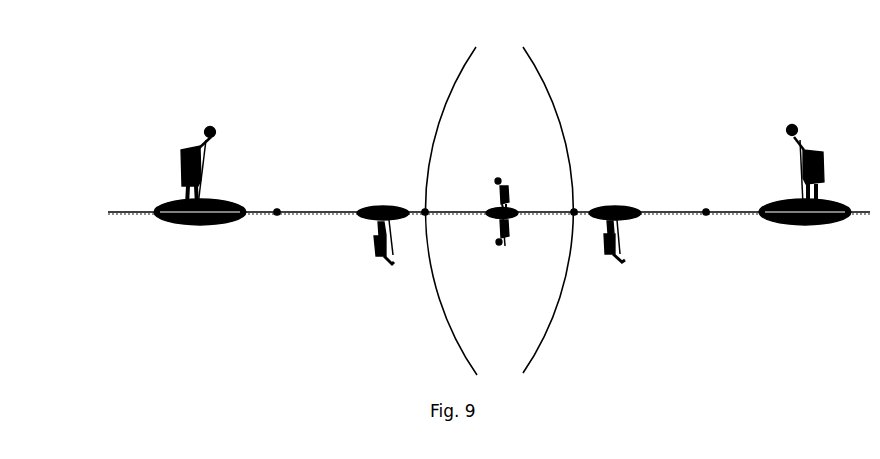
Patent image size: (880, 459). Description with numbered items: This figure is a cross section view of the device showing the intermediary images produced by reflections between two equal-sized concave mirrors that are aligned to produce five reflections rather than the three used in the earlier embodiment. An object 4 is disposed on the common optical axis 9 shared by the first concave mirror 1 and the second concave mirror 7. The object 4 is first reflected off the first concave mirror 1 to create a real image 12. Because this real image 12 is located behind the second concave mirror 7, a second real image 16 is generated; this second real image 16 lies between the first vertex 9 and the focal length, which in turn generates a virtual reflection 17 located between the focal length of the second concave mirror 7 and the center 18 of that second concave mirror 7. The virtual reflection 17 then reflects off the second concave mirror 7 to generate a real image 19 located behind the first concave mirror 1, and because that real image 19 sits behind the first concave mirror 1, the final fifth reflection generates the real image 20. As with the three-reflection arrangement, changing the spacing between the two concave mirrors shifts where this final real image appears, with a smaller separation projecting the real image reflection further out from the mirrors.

The first concave mirror 1 is at (428, 152).
The object 4 is at (807, 135).
The second concave mirror 7 is at (562, 118).
The optical axis 9 is at (138, 213).
The real image 12 is at (627, 265).
The second real image 16 is at (507, 242).
The virtual reflection 17 is at (370, 248).
The center of second concave mirror 18 is at (277, 214).
The real image 19 is at (182, 147).
The real image 20 is at (505, 177).